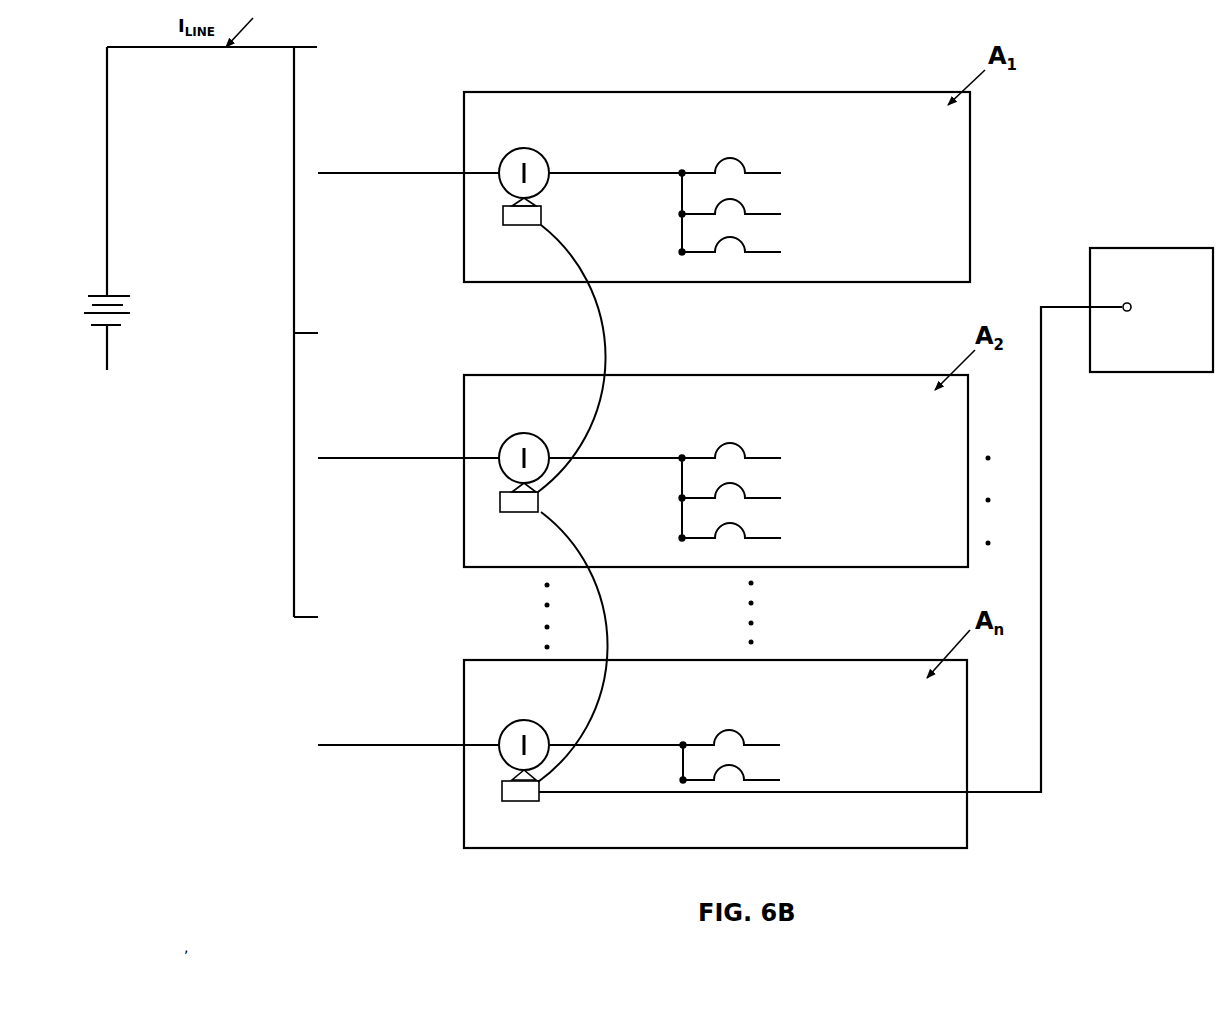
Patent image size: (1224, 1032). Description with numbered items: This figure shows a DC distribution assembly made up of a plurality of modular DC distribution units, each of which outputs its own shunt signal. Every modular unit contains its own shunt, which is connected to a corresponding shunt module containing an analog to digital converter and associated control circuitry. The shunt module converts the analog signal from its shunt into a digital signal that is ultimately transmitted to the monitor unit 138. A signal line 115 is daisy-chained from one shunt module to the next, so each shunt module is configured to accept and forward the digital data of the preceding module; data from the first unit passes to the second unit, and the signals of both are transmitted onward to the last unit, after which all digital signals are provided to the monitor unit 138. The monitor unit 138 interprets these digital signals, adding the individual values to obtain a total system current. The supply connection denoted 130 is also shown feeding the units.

The signal line 115 is at (606, 333).
The power supply bus 130 is at (258, 955).
The monitor unit 138 is at (1154, 256).